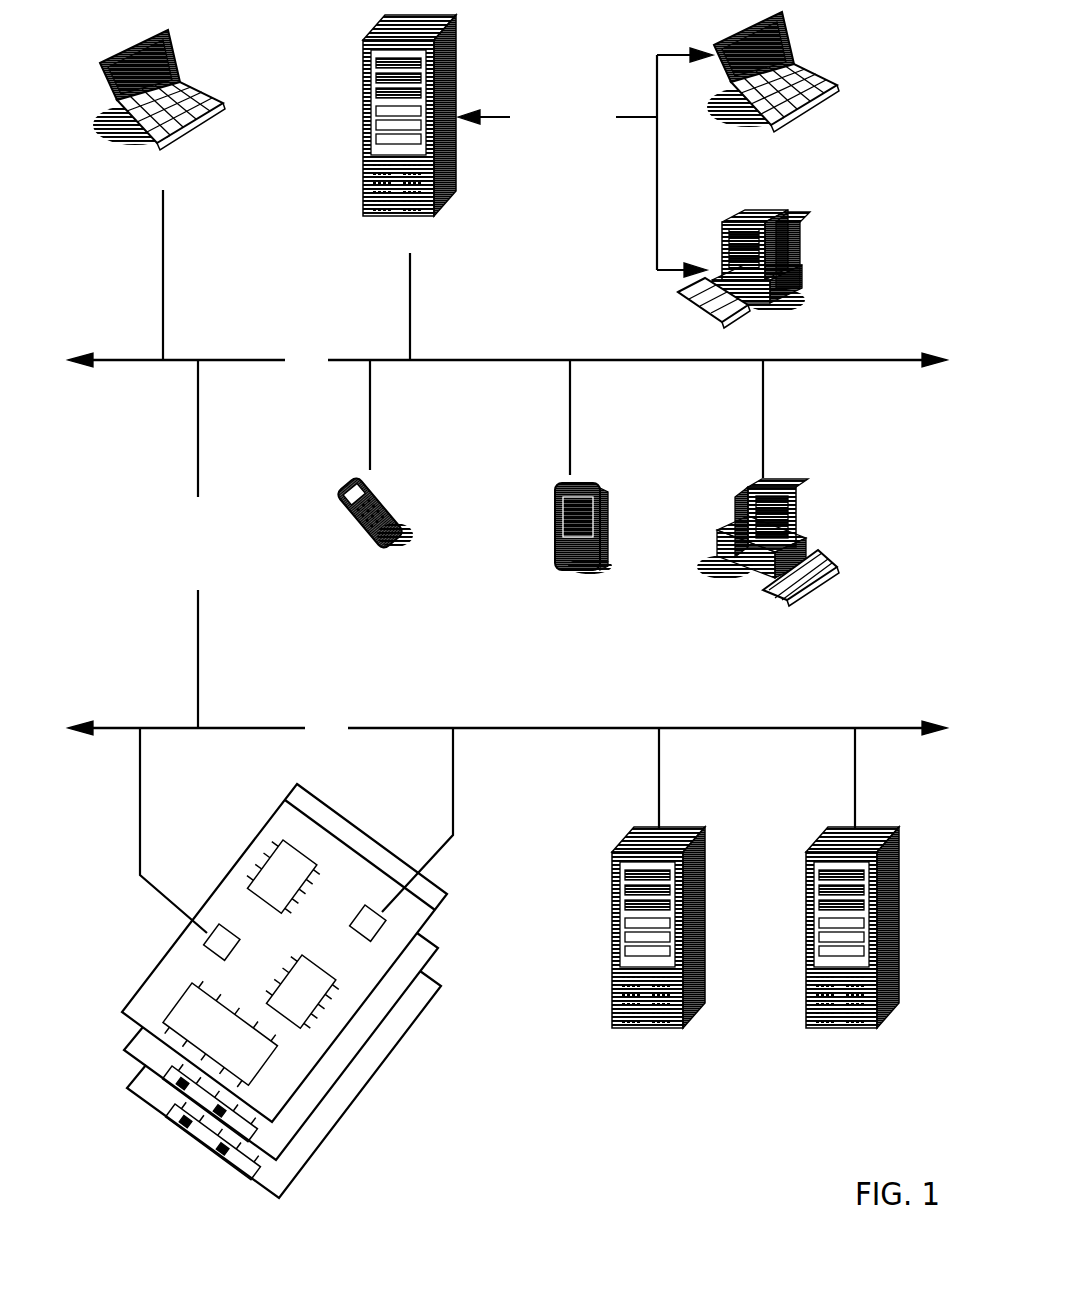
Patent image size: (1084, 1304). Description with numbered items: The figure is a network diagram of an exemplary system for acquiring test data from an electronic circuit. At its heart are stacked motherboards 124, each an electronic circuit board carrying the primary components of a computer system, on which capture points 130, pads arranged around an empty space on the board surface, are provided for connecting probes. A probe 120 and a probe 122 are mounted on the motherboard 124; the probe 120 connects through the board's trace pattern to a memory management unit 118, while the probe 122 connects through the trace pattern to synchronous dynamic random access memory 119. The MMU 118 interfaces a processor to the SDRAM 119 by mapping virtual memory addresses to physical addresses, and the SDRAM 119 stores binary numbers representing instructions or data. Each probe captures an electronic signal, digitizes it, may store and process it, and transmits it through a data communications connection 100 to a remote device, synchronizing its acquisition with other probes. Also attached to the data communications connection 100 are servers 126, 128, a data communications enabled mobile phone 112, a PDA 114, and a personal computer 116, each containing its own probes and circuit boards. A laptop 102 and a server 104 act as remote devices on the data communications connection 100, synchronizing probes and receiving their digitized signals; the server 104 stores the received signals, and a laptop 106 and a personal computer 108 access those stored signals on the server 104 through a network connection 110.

The data communications connection 100 is at (323, 369).
The laptop 102 is at (217, 184).
The server 104 is at (450, 249).
The laptop 106 is at (930, 136).
The personal computer 108 is at (882, 309).
The network connection 110 is at (580, 157).
The mobile phone 112 is at (393, 651).
The PDA 114 is at (597, 639).
The personal computer 116 is at (813, 681).
The memory management unit 118 is at (285, 818).
The synchronous dynamic random access memory 119 is at (305, 1048).
The probe 120 is at (185, 943).
The probe 122 is at (361, 890).
The motherboard 124 is at (110, 1013).
The server 126 is at (700, 1059).
The server 128 is at (892, 1059).
The capture points 130 is at (268, 967).